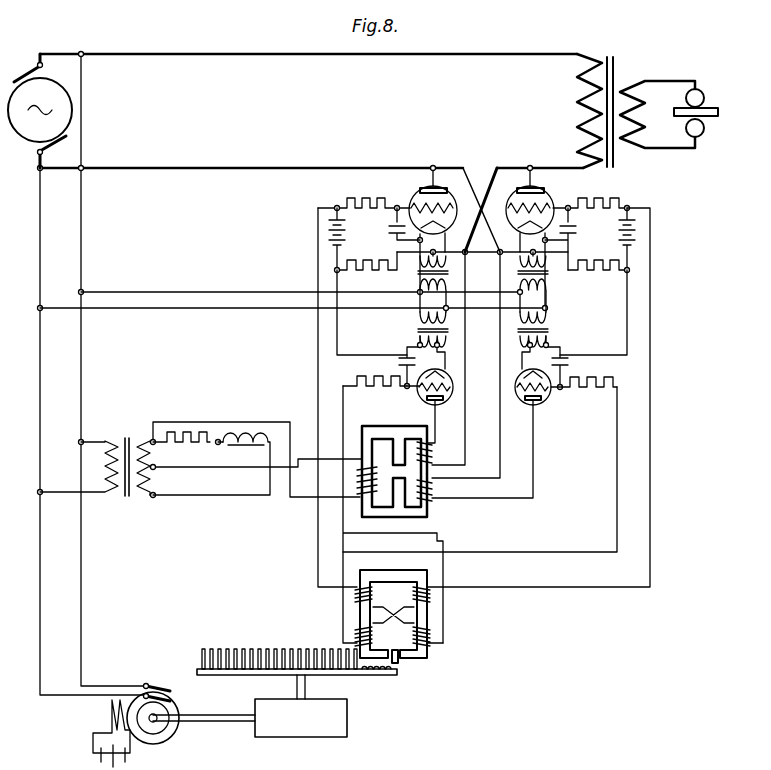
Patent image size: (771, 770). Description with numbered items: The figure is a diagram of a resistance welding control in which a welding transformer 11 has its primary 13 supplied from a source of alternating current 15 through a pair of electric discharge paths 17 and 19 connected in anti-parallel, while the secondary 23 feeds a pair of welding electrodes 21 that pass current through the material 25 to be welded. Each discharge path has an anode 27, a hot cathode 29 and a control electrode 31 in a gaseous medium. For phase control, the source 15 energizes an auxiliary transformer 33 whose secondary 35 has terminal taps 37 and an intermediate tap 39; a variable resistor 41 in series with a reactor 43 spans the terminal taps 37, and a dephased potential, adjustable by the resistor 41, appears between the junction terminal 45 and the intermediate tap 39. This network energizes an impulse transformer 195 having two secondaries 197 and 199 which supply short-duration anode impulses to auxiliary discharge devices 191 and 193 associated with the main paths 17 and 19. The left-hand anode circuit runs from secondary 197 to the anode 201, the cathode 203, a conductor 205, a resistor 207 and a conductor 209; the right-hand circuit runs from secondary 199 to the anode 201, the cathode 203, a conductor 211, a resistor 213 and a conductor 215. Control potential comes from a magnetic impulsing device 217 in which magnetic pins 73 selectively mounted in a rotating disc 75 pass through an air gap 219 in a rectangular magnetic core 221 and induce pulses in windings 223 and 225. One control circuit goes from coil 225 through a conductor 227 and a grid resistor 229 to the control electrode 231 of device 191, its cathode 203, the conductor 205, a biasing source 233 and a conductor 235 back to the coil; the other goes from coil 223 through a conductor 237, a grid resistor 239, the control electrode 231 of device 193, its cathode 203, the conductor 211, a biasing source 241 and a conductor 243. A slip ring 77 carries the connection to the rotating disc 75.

The source of alternating current 15 is at (40, 111).
The welding transformer 11 is at (612, 98).
The primary 13 is at (575, 80).
The secondary 23 is at (635, 82).
The welding electrodes 21 is at (702, 120).
The material to be welded 25 is at (718, 110).
The anode 27 is at (433, 185).
The control electrode 31 is at (495, 199).
The electric discharge path 17 is at (478, 217).
The electric discharge path 19 is at (534, 241).
The hot cathode 29 is at (481, 226).
The biasing source 233 is at (369, 234).
The resistor 207 is at (360, 273).
The conductor 205 is at (338, 330).
The conductor 235 is at (318, 329).
The cathode 203 is at (518, 372).
The conductor 215 is at (511, 282).
The conductor 209 is at (465, 330).
The conductor 211 is at (585, 357).
The auxiliary discharge device 191 is at (468, 406).
The auxiliary discharge device 193 is at (542, 401).
The control electrode 231 is at (516, 388).
The anode 201 is at (437, 404).
The grid resistor 229 is at (381, 380).
The grid resistor 239 is at (600, 383).
The biasing source 241 is at (616, 238).
The resistor 213 is at (590, 276).
The conductor 243 is at (652, 303).
The impulse transformer 195 is at (413, 462).
The secondary 197 is at (428, 454).
The secondary 199 is at (432, 489).
The auxiliary transformer 33 is at (117, 468).
The secondary 35 is at (141, 445).
The terminal taps 37 is at (155, 445).
The intermediate tap 39 is at (156, 468).
The variable resistor 41 is at (197, 432).
The junction terminal 45 is at (220, 440).
The reactor 43 is at (250, 435).
The conductor 227 is at (443, 546).
The conductor 237 is at (532, 556).
The magnetic impulsing device 217 is at (399, 628).
The winding 223 is at (360, 628).
The rectangular magnetic core 221 is at (427, 615).
The winding 225 is at (428, 636).
The air gap 219 is at (400, 661).
The magnetic pins 73 is at (304, 679).
The disc 75 is at (200, 662).
The slip ring 77 is at (174, 713).